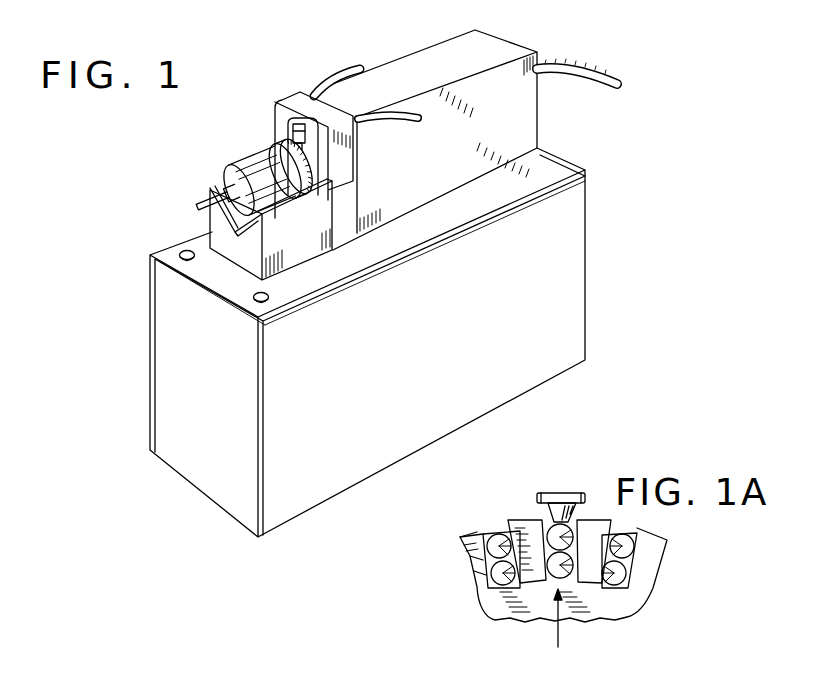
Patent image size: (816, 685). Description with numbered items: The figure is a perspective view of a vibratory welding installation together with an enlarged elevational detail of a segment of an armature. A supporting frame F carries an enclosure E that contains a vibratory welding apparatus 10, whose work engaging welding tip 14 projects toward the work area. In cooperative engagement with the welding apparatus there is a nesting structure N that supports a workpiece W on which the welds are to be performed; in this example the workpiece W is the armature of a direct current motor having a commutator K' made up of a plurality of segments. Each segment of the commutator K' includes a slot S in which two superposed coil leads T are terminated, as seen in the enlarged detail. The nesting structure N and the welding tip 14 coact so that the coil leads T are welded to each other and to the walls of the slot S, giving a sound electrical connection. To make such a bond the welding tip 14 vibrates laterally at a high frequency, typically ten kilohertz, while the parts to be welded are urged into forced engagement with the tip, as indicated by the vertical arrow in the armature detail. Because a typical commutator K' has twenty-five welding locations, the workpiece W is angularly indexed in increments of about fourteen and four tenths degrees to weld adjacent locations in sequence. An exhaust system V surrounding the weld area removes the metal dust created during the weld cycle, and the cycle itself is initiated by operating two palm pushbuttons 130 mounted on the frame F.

In FIG. 1, the vibratory welding apparatus 10 is at (293, 134).
In FIG. 1, the welding tip 14 is at (299, 143).
In FIG. 1A, the welding tip 14 is at (564, 498).
In FIG. 1, the palm pushbuttons 130 is at (183, 258).
In FIG. 1, the exhaust system V is at (313, 98).
In FIG. 1, the workpiece W is at (256, 161).
In FIG. 1, the enclosure E is at (452, 164).
In FIG. 1, the nesting structure N is at (305, 237).
In FIG. 1, the supporting frame F is at (441, 345).
In FIG. 1, the commutator K' is at (346, 178).
In FIG. 1A, the commutator K' is at (564, 582).
In FIG. 1A, the slot S is at (483, 531).
In FIG. 1A, the coil leads T is at (490, 556).